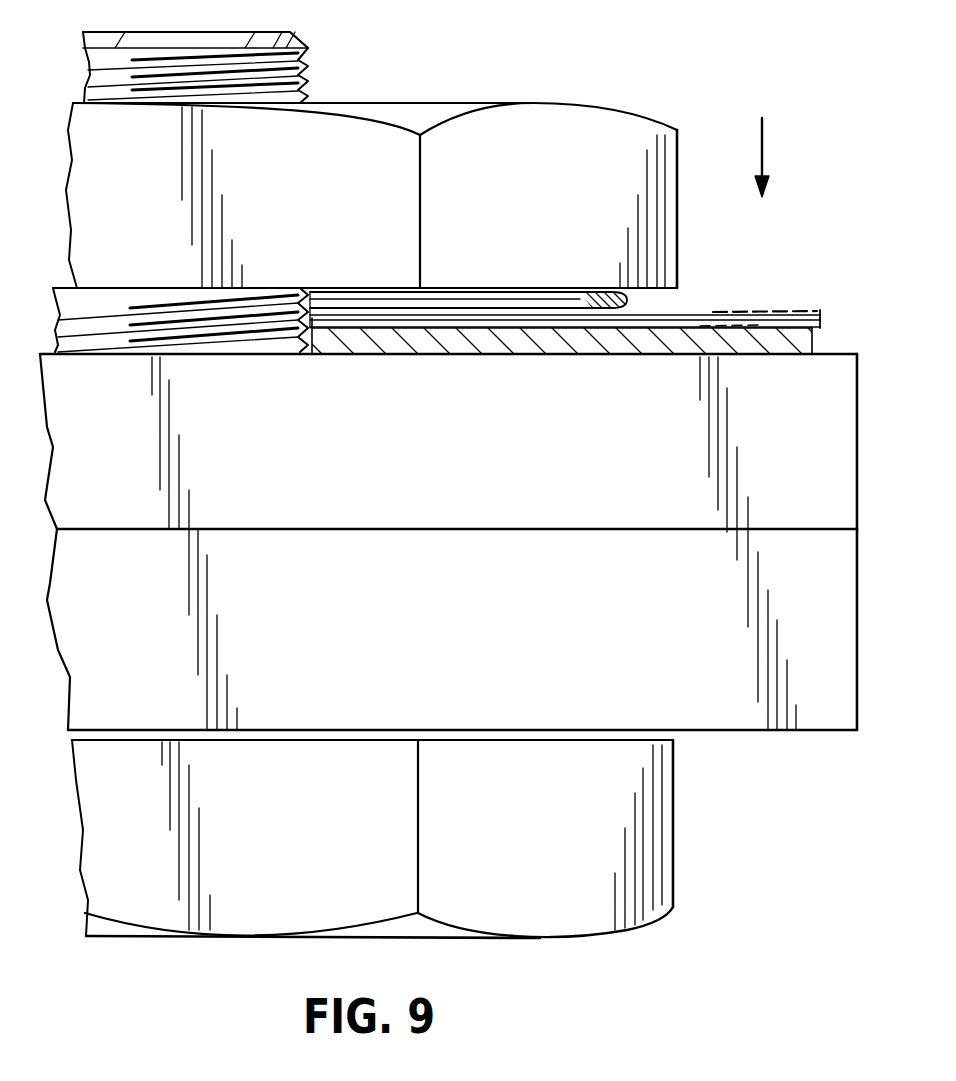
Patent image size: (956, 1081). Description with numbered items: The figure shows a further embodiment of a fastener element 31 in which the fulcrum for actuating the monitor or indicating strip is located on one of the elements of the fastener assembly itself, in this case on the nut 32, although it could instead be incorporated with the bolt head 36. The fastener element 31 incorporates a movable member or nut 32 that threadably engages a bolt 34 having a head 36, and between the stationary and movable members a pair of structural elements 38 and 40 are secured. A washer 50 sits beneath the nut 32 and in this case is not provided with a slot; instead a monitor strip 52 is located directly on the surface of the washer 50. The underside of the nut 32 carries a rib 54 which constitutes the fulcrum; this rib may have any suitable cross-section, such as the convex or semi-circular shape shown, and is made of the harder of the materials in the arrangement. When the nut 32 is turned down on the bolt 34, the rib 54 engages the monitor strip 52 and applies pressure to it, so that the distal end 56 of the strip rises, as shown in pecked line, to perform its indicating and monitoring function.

The fastener element 31 is at (710, 848).
The nut 32 is at (577, 137).
The bolt 34 is at (318, 60).
The head 36 is at (618, 790).
The structural element 38 is at (633, 510).
The structural element 40 is at (625, 597).
The washer 50 is at (550, 350).
The monitor strip 52 is at (683, 314).
The rib 54 is at (597, 292).
The distal end 56 is at (810, 308).